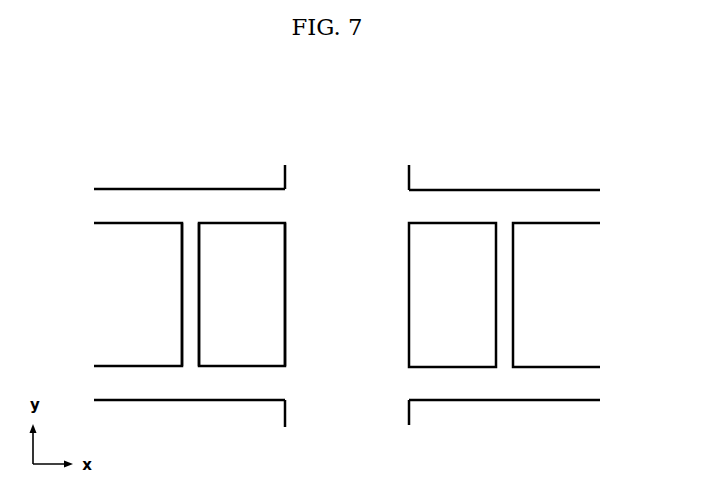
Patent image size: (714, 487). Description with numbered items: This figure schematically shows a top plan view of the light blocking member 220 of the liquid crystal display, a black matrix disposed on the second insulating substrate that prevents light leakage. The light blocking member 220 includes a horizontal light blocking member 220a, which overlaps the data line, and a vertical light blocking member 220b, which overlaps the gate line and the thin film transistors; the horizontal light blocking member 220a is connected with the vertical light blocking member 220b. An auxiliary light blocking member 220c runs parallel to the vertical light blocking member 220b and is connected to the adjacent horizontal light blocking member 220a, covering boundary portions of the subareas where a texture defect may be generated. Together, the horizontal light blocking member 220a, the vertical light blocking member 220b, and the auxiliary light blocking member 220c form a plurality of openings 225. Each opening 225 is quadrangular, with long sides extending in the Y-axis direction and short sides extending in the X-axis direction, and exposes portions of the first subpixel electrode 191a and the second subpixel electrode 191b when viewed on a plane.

The light blocking member 220 is at (234, 183).
The horizontal light blocking member 220a is at (140, 391).
The vertical light blocking member 220b is at (305, 360).
The auxiliary light blocking member 220c is at (190, 355).
The opening 225 is at (285, 292).
The first subpixel electrode 191a is at (122, 292).
The second subpixel electrode 191b is at (549, 297).